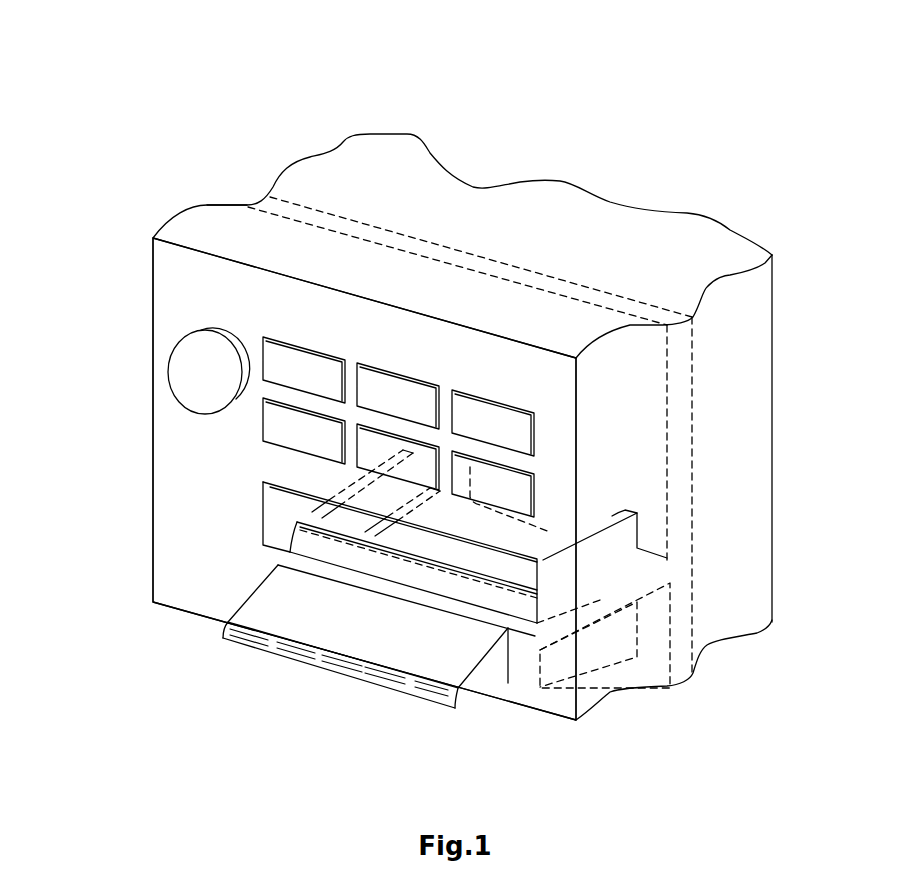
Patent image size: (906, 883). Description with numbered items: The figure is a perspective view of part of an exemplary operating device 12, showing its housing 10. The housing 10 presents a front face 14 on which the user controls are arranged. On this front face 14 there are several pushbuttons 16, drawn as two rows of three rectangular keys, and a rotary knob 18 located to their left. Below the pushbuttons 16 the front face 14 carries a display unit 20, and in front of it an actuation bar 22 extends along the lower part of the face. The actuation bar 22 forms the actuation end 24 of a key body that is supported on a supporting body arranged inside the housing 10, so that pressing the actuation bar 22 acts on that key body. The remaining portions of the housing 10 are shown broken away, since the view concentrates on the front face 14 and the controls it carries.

The housing 10 is at (222, 222).
The operating device 12 is at (444, 104).
The front face 14 is at (185, 278).
The pushbuttons 16 is at (500, 425).
The rotary knob 18 is at (193, 380).
The display unit 20 is at (280, 517).
The actuation bar 22 is at (486, 678).
The actuation end 24 is at (369, 708).